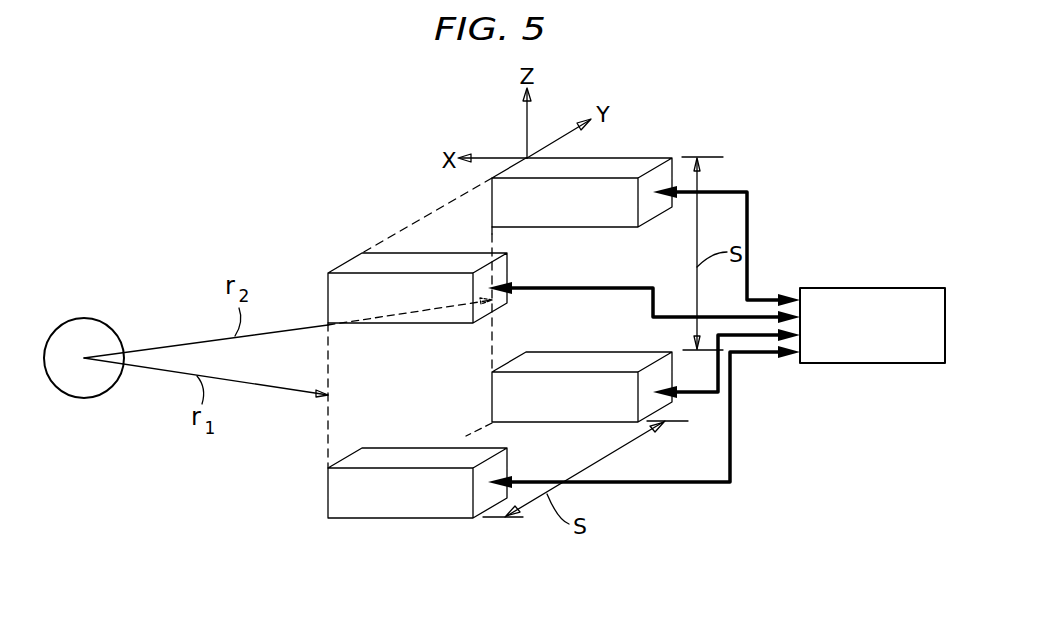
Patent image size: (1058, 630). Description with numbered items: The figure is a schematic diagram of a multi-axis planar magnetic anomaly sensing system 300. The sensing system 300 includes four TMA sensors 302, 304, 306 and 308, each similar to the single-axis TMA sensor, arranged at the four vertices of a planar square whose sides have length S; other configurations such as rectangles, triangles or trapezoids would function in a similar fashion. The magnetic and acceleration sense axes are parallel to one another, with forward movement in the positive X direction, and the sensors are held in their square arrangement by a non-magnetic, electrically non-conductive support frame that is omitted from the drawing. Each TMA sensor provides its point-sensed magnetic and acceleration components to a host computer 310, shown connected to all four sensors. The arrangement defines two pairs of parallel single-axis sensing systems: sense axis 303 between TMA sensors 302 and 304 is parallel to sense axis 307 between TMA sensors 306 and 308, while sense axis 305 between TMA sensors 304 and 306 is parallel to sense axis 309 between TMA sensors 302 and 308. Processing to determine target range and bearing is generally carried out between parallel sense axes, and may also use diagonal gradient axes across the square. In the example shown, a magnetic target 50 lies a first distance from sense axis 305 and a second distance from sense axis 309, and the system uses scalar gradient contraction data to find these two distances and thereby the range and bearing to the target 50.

The magnetic target 50 is at (71, 318).
The planar magnetic anomaly sensing system 300 is at (252, 145).
The TMA sensor 302 is at (599, 350).
The sense axis 303 is at (464, 437).
The TMA sensor 304 is at (402, 520).
The sense axis 305 is at (326, 430).
The TMA sensor 306 is at (393, 327).
The sense axis 307 is at (396, 235).
The TMA sensor 308 is at (648, 157).
The sense axis 309 is at (497, 340).
The host computer 310 is at (820, 288).